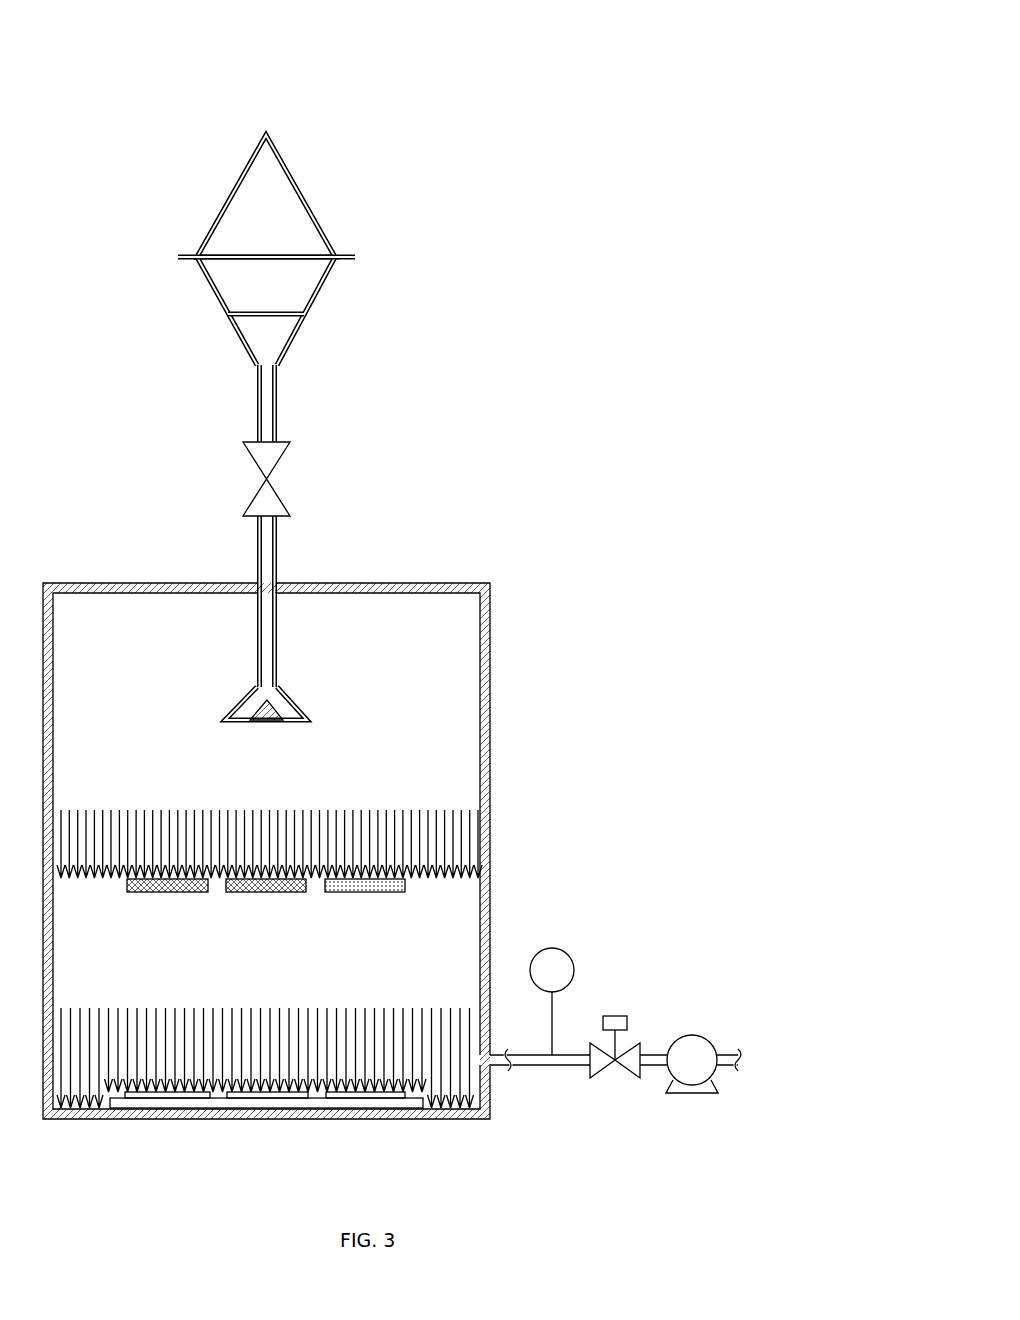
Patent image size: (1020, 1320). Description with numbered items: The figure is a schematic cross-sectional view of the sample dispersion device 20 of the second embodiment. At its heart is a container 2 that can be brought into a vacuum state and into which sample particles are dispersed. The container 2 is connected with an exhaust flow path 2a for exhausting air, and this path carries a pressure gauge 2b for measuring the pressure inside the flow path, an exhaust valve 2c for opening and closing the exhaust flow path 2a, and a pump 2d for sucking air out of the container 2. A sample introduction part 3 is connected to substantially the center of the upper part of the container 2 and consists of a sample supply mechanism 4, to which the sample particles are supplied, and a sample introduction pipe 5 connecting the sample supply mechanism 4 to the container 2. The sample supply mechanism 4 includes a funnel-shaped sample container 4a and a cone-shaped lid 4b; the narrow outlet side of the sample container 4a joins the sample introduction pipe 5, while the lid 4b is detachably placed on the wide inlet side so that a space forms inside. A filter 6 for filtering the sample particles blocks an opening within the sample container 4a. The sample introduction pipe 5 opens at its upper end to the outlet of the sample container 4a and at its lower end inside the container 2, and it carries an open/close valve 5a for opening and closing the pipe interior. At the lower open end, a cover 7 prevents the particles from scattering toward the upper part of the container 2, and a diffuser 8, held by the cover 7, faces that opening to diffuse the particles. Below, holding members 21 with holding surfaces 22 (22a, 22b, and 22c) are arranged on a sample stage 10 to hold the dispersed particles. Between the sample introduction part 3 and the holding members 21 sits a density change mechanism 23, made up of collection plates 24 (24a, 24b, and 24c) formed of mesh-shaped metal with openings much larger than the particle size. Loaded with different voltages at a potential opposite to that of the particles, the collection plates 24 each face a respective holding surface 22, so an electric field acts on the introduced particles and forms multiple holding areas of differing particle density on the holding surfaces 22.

The sample dispersion device 20 is at (588, 140).
The sample introduction part 3 is at (410, 154).
The sample supply mechanism 4 is at (256, 250).
The sample container 4a is at (229, 318).
The lid 4b is at (295, 185).
The filter 6 is at (262, 310).
The sample introduction pipe 5 is at (280, 420).
The open/close valve 5a is at (247, 452).
The cover 7 is at (243, 702).
The diffuser 8 is at (267, 722).
The container 2 is at (150, 582).
The density change mechanism 23 is at (376, 790).
The collection plates 24 is at (258, 908).
The collection plate 24a is at (153, 893).
The collection plate 24b is at (265, 893).
The collection plate 24c is at (370, 893).
The holding members 21 is at (386, 996).
The holding surfaces 22 is at (264, 1126).
The holding surface 22a is at (162, 1098).
The holding surface 22b is at (272, 1098).
The holding surface 22c is at (358, 1098).
The sample stage 10 is at (112, 1110).
The exhaust flow path 2a is at (570, 1066).
The pressure gauge 2b is at (552, 948).
The exhaust valve 2c is at (615, 1016).
The pump 2d is at (692, 1035).